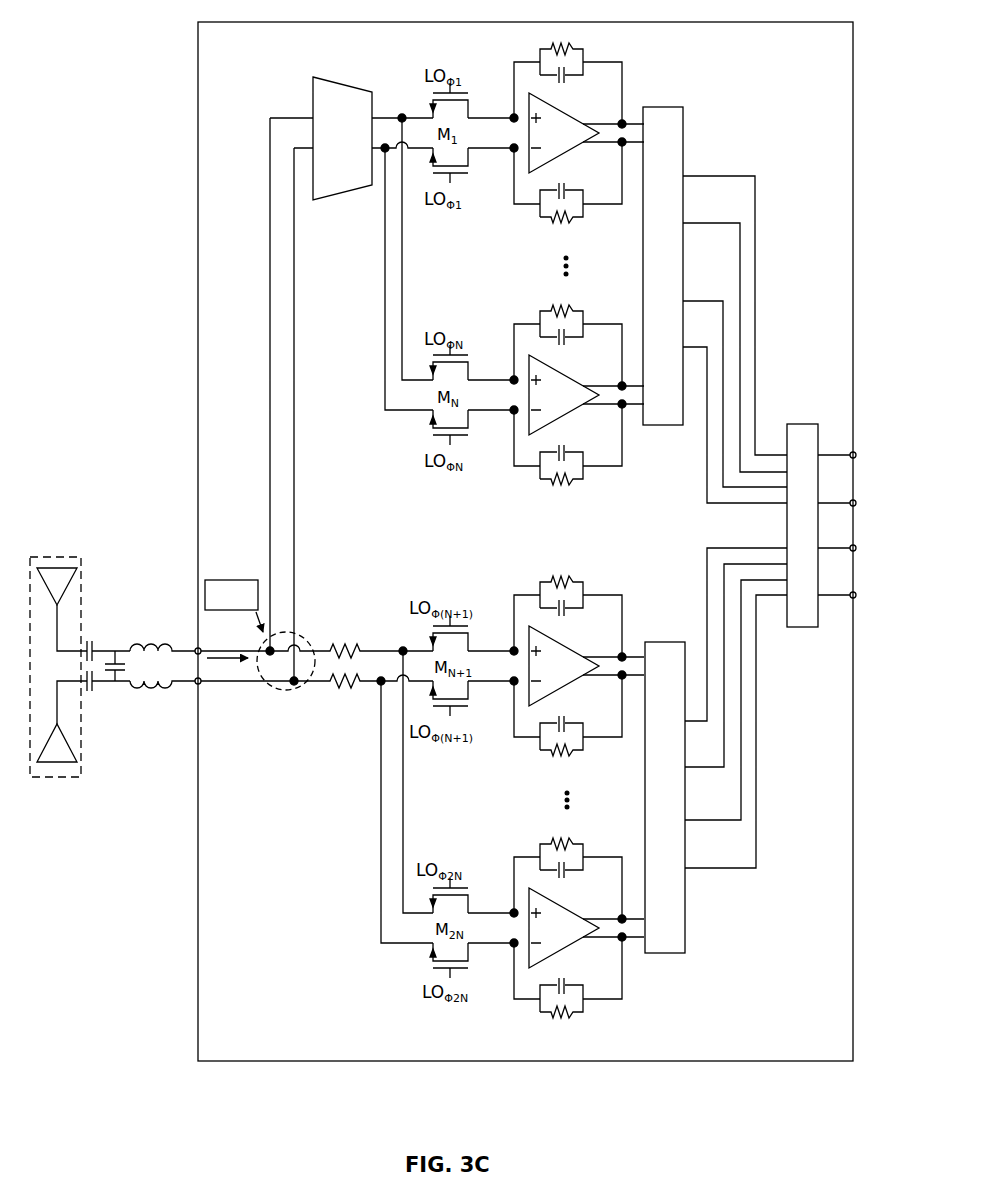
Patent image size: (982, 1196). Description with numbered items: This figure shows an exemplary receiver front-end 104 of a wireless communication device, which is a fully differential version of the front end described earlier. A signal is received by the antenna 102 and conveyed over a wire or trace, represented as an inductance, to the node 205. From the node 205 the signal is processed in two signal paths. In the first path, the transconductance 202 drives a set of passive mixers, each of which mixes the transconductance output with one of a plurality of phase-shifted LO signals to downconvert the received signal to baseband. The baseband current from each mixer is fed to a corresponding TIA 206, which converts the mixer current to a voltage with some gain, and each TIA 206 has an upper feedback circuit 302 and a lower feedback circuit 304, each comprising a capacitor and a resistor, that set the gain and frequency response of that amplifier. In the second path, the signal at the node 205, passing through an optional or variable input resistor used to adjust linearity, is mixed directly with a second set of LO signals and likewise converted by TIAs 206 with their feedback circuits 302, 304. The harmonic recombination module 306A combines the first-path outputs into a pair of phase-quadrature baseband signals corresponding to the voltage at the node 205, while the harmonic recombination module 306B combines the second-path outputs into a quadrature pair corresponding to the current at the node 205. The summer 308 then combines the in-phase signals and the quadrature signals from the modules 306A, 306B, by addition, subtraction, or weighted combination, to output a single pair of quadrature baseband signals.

The wireless communication device front-end 104 is at (198, 78).
The antenna 102 is at (72, 550).
The transconductance 202 is at (351, 138).
The node 205 is at (295, 690).
The transimpedance amplifier (TIA) 206 is at (586, 530).
The feedback circuit 302 is at (584, 477).
The feedback circuit 304 is at (563, 594).
The harmonic recombination module 306A is at (715, 305).
The harmonic recombination module 306B is at (716, 750).
The summer 308 is at (821, 525).